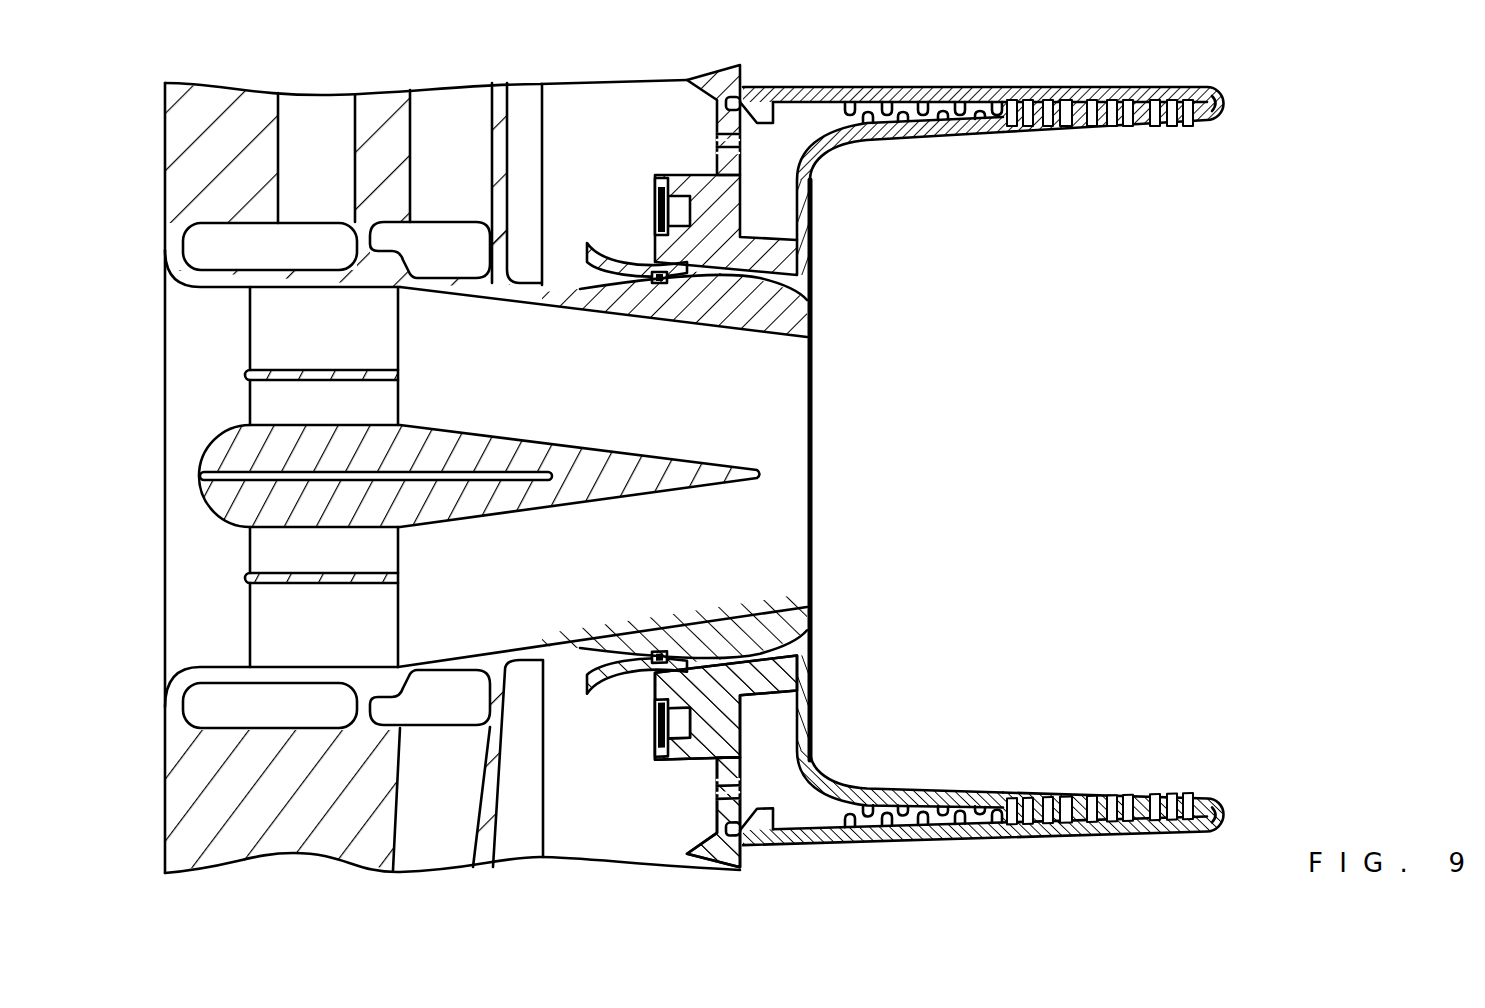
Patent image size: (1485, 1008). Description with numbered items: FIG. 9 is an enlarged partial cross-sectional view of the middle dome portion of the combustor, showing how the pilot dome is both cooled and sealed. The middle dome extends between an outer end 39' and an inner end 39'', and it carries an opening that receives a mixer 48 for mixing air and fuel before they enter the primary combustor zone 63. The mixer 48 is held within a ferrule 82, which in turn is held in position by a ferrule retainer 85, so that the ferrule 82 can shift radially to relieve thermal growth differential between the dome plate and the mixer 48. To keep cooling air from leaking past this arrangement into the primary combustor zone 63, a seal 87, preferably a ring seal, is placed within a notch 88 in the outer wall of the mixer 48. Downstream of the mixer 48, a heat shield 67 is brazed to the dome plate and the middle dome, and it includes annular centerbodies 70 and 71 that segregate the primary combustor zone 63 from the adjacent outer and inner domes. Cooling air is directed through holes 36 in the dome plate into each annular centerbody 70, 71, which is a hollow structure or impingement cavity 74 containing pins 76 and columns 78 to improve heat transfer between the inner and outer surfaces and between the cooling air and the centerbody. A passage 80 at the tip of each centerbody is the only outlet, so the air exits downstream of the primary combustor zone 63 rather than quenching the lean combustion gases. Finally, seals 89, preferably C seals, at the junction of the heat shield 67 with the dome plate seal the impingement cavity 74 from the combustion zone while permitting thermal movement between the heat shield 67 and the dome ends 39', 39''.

The holes 36 is at (718, 140).
The outer end 39' is at (699, 467).
The inner end 39'' is at (708, 763).
The mixer 48 is at (812, 415).
The primary combustor zone 63 is at (985, 485).
The heat shield 67 is at (808, 195).
The annular centerbody 70 is at (1158, 118).
The annular centerbody 71 is at (1108, 798).
The impingement cavity 74 is at (797, 157).
The pins 76 is at (960, 120).
The columns 78 is at (1108, 101).
The passage 80 is at (1228, 104).
The ferrule 82 is at (622, 258).
The ferrule retainer 85 is at (653, 202).
The seal 87 is at (667, 287).
The notch 88 is at (652, 285).
The seal 89 is at (727, 100).